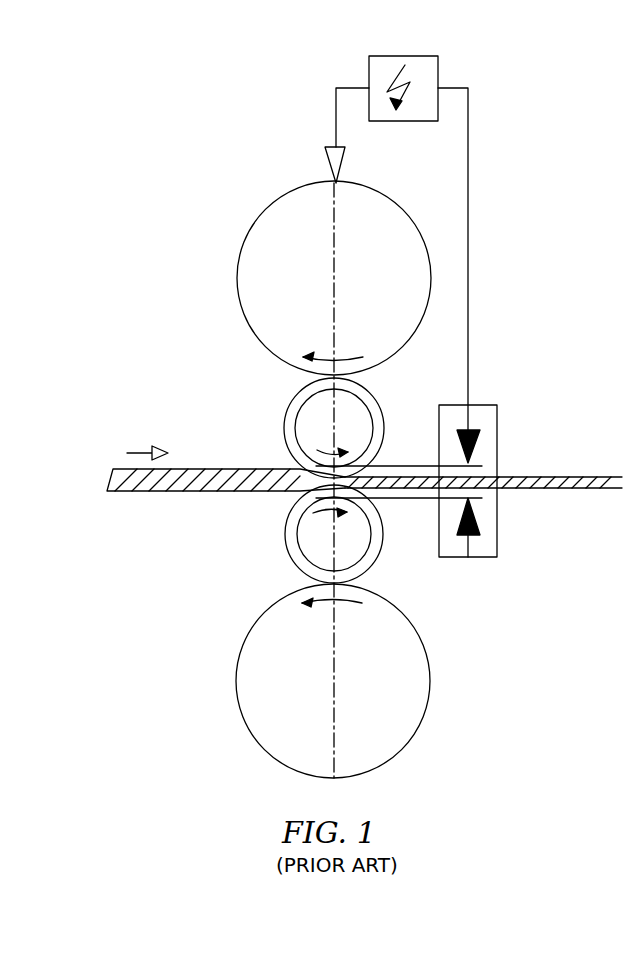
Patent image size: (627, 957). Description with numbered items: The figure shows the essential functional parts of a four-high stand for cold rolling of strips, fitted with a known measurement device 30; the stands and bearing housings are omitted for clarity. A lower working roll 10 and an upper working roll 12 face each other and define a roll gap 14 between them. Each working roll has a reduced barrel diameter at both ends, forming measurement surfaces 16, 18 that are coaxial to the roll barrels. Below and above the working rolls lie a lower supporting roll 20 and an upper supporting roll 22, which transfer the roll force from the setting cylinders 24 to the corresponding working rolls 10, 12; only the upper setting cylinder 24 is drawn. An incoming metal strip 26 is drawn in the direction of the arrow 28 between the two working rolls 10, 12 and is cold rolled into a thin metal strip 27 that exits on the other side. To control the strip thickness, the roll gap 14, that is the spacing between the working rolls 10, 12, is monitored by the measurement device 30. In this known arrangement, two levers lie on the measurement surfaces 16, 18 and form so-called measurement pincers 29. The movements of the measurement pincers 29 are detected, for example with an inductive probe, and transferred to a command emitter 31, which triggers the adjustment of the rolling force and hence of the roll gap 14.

The lower working roll 10 is at (302, 541).
The upper working roll 12 is at (318, 402).
The roll gap 14 is at (312, 490).
The measurement surface 16 is at (301, 567).
The measurement surface 18 is at (290, 432).
The lower supporting roll 20 is at (241, 696).
The upper supporting roll 22 is at (273, 222).
The setting cylinder 24 is at (334, 162).
The incoming metal strip 26 is at (130, 488).
The thin metal strip 27 is at (560, 480).
The arrow 28 is at (137, 453).
The measurement pincers 29 is at (399, 505).
The measurement device 30 is at (473, 428).
The command emitter 31 is at (407, 121).